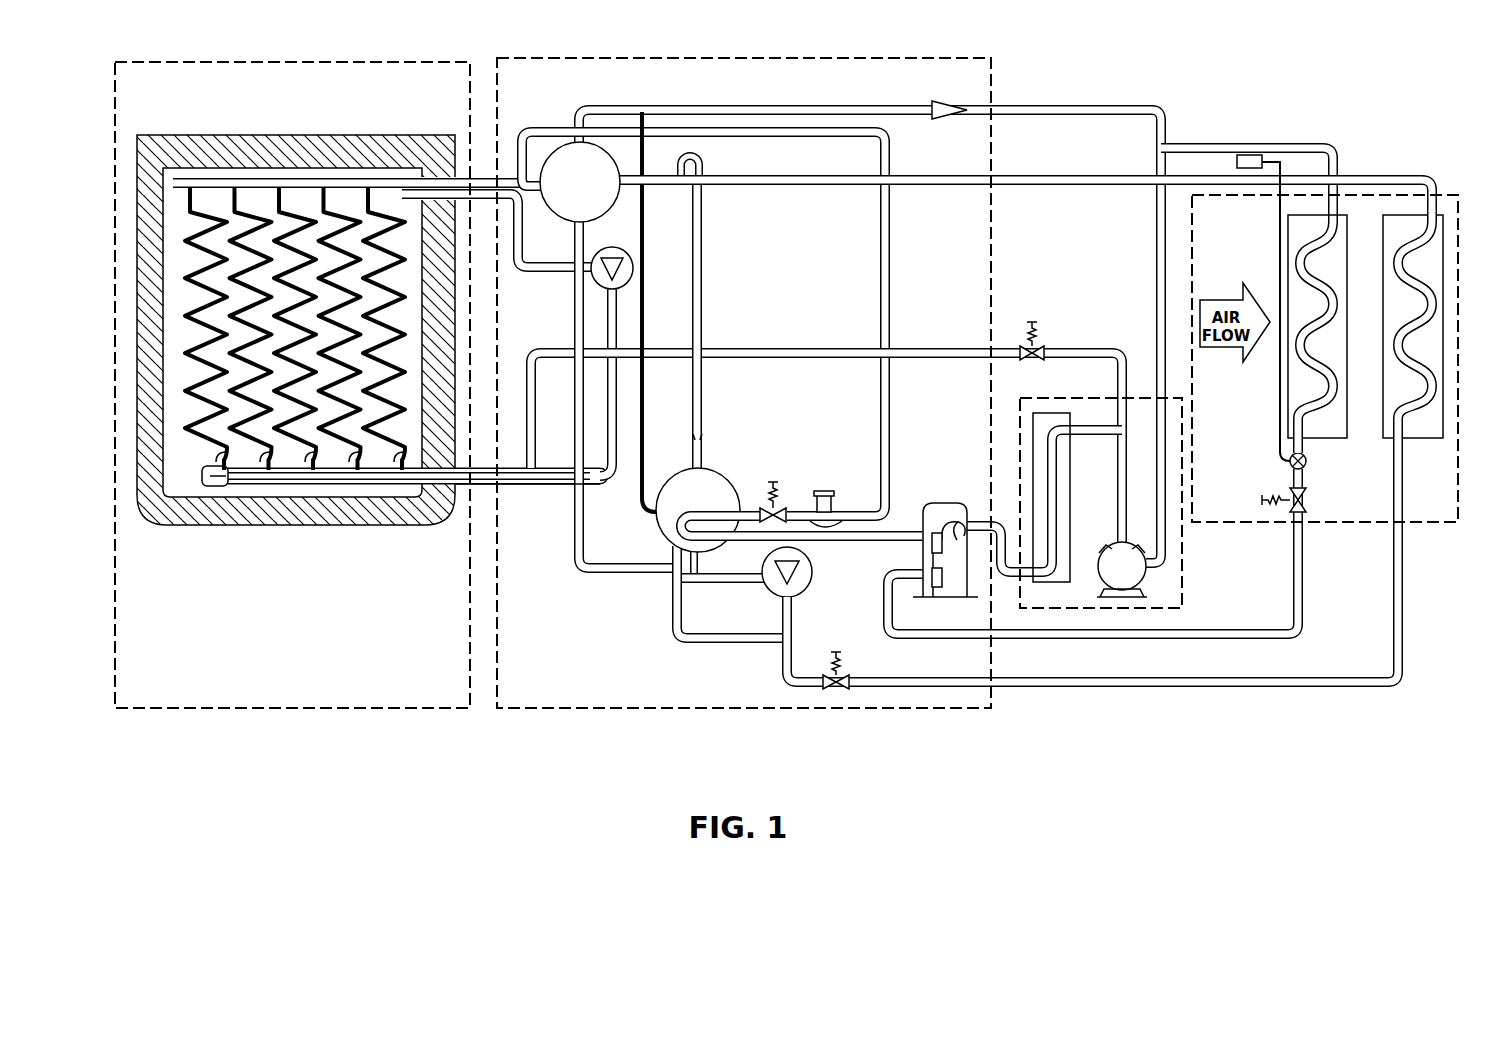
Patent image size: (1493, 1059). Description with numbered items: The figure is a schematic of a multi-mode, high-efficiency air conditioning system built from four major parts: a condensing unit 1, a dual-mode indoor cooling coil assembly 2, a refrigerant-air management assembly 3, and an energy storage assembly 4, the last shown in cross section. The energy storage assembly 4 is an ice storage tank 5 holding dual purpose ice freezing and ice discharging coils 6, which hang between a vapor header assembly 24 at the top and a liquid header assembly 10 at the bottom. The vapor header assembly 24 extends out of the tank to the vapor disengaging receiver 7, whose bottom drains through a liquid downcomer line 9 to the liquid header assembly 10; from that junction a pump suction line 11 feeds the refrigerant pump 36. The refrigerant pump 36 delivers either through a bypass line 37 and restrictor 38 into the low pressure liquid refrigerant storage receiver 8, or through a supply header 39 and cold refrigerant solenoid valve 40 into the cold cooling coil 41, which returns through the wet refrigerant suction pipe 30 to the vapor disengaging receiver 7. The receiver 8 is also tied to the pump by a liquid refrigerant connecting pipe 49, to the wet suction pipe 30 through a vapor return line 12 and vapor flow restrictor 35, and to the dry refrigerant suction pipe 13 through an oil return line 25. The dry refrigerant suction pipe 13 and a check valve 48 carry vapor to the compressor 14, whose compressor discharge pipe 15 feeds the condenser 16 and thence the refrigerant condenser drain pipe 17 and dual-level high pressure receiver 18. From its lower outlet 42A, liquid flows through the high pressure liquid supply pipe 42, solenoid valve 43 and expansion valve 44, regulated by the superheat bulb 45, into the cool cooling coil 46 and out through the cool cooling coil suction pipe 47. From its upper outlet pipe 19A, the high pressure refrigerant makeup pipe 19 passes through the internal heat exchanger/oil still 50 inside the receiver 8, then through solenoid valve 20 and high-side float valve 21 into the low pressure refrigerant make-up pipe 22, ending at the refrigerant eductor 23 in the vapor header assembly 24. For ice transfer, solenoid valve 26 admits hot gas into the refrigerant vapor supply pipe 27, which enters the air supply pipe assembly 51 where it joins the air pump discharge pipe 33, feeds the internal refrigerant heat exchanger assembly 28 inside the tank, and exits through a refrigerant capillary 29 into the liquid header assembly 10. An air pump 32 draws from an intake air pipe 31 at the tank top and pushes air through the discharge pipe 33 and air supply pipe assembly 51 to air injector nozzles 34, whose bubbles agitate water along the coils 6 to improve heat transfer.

The condensing unit 1 is at (1182, 587).
The dual-mode indoor cooling coil assembly 2 is at (1317, 523).
The refrigerant-air management assembly 3 is at (620, 708).
The energy storage assembly 4 is at (388, 708).
The ice storage tank 5 is at (330, 528).
The ice freezing and ice discharging coils 6 is at (250, 210).
The vapor disengaging receiver 7 is at (598, 219).
The low pressure liquid refrigerant storage receiver 8 is at (692, 468).
The liquid downcomer line 9 is at (574, 300).
The liquid header assembly 10 is at (405, 480).
The pump suction line 11 is at (587, 576).
The vapor return line 12 is at (702, 317).
The dry refrigerant suction pipe 13 is at (690, 108).
The compressor 14 is at (1125, 598).
The compressor discharge pipe 15 is at (1117, 507).
The condenser 16 is at (1032, 432).
The refrigerant condenser drain pipe 17 is at (988, 520).
The dual-level high pressure receiver 18 is at (943, 597).
The high pressure refrigerant makeup pipe 19 is at (878, 545).
The upper outlet pipe 19A is at (940, 527).
The solenoid valve 20 is at (768, 492).
The high-side float valve 21 is at (827, 492).
The low pressure refrigerant make-up pipe 22 is at (890, 288).
The refrigerant eductor 23 is at (523, 180).
The vapor header assembly 24 is at (335, 178).
The oil return line 25 is at (645, 320).
The solenoid valve 26 is at (1037, 324).
The refrigerant vapor supply pipe 27 is at (898, 348).
The internal refrigerant heat exchanger assembly 28 is at (300, 469).
The refrigerant capillary 29 is at (215, 488).
The wet refrigerant suction pipe 30 is at (738, 177).
The intake air pipe 31 is at (522, 256).
The air pump 32 is at (633, 263).
The air pump discharge pipe 33 is at (597, 480).
The air injector nozzles 34 is at (265, 460).
The vapor flow restrictor 35 is at (703, 437).
The refrigerant pump 36 is at (767, 592).
The bypass line 37 is at (735, 640).
The restrictor 38 is at (672, 600).
The supply header 39 is at (803, 687).
The cold refrigerant solenoid valve 40 is at (845, 663).
The cold cooling coil 41 is at (1425, 440).
The cool cooling coil high pressure liquid supply pipe 42 is at (1063, 642).
The lower outlet 42A is at (945, 580).
The solenoid valve 43 is at (1278, 510).
The expansion valve 44 is at (1304, 465).
The superheat bulb 45 is at (1243, 155).
The cool cooling coil 46 is at (1287, 377).
The cool cooling coil suction pipe 47 is at (1280, 143).
The check valve 48 is at (940, 120).
The liquid refrigerant connecting pipe 49 is at (702, 554).
The internal heat exchanger/oil still 50 is at (678, 527).
The air supply pipe assembly 51 is at (508, 478).